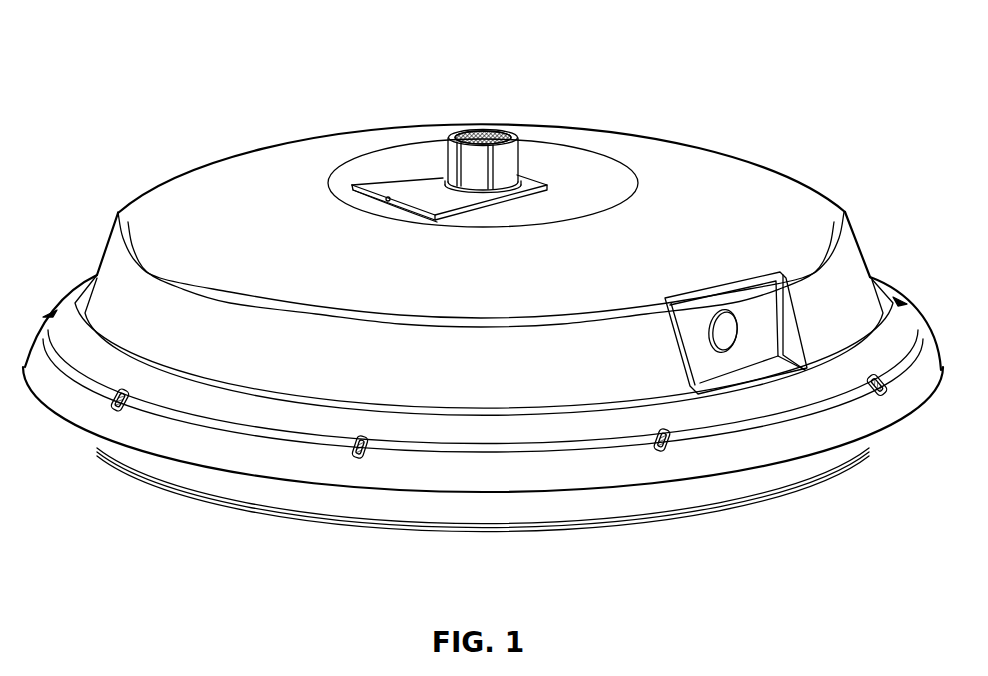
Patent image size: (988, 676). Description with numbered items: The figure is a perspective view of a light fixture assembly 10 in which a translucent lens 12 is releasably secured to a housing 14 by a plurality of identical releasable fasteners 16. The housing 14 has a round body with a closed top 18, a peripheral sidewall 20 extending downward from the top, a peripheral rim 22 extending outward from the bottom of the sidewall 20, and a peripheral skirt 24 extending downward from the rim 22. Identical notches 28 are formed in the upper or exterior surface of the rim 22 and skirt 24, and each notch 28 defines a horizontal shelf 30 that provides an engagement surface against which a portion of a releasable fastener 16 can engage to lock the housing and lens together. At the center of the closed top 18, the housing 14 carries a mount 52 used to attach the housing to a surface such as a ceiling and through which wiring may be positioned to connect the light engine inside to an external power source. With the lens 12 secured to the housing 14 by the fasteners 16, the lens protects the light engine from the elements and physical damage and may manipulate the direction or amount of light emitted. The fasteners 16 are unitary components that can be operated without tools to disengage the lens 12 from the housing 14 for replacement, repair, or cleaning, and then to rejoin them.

The light fixture assembly 10 is at (148, 47).
The translucent lens 12 is at (682, 500).
The housing 14 is at (737, 173).
The releasable fastener 16 is at (357, 452).
The closed top 18 is at (412, 285).
The peripheral sidewall 20 is at (117, 268).
The peripheral rim 22 is at (90, 367).
The peripheral skirt 24 is at (180, 443).
The notch 28 is at (663, 430).
The horizontal shelf 30 is at (657, 435).
The mount 52 is at (505, 158).